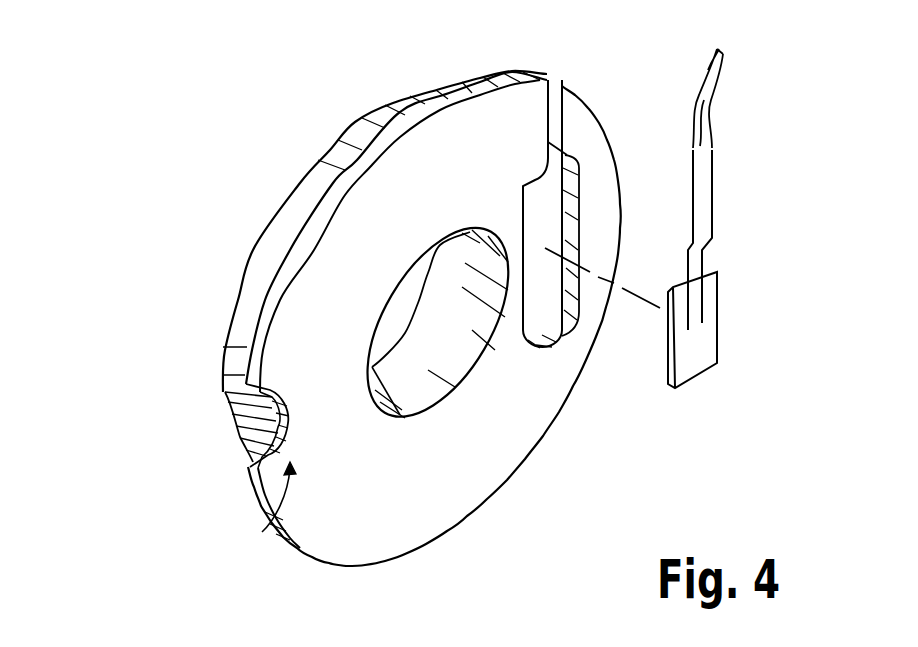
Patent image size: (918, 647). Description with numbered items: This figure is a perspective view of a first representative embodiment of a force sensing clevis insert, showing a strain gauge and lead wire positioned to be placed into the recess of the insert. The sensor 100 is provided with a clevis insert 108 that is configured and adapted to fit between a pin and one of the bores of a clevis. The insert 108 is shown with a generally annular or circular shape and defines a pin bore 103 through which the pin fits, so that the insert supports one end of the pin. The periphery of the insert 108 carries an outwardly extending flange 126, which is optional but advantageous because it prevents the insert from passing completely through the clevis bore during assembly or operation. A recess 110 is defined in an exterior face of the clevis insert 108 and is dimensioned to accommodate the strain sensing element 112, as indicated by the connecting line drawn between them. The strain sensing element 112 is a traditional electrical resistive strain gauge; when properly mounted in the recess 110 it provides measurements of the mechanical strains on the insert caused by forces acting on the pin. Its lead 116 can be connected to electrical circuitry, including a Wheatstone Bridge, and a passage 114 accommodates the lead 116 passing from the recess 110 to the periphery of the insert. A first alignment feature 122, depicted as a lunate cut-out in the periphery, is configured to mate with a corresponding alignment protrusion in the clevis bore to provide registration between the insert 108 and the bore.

The sensor 100 is at (461, 295).
The pin bore 103 is at (457, 352).
The clevis insert 108 is at (440, 543).
The recess 110 is at (548, 348).
The strain sensing element 112 is at (712, 312).
The passage 114 is at (548, 67).
The lead 116 is at (720, 72).
The first alignment feature 122 is at (245, 437).
The flange 126 is at (270, 512).